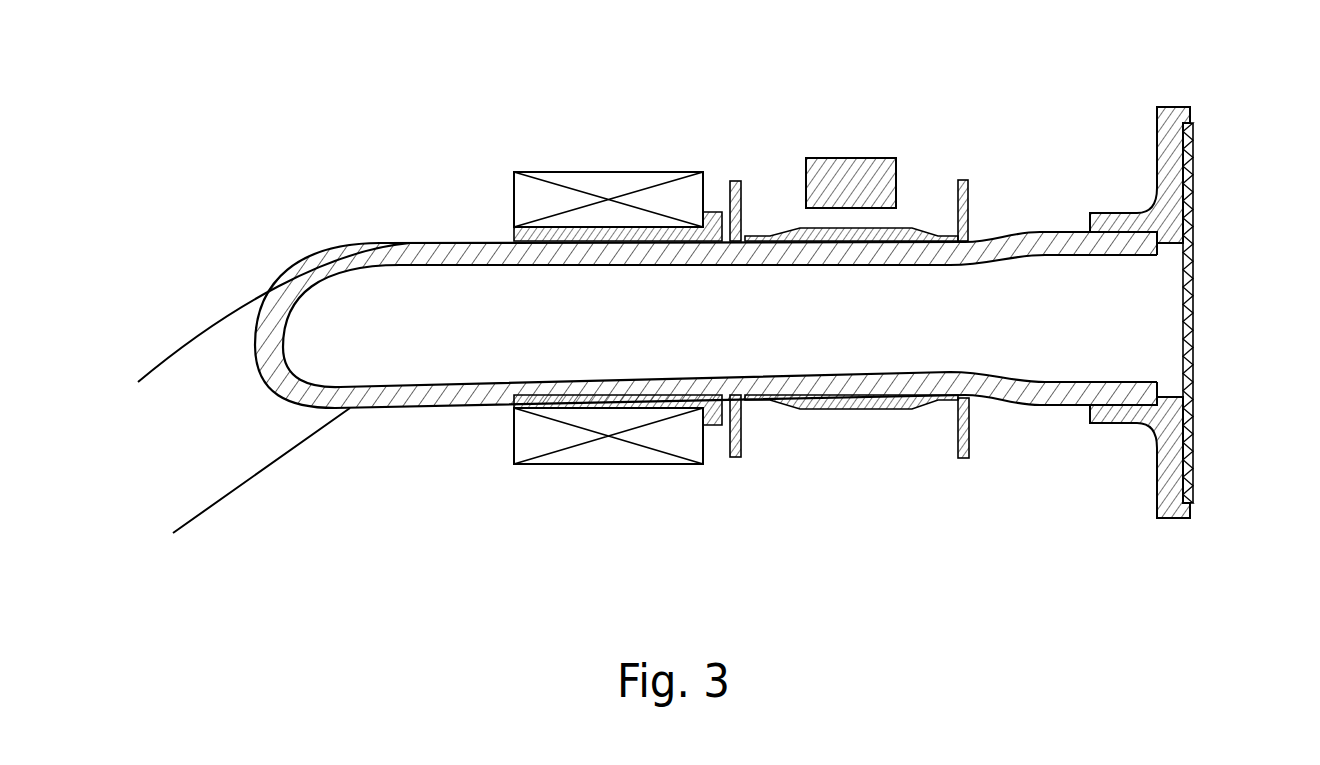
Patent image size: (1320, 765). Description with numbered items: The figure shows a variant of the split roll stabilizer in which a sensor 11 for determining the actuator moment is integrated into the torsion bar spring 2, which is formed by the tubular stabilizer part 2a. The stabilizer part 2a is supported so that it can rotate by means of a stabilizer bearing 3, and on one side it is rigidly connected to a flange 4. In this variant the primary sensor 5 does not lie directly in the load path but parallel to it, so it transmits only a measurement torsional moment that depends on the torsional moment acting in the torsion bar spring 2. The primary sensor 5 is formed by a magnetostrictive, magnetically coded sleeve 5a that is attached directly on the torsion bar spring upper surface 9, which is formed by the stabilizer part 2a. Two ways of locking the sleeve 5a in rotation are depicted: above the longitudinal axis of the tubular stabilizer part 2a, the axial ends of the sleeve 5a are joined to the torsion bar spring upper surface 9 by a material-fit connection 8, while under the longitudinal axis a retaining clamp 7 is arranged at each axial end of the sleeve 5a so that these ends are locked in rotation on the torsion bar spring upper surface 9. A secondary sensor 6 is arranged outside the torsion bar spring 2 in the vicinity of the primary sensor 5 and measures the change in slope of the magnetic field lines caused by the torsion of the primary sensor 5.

The torsion bar spring 2 is at (647, 382).
The stabilizer part 2a is at (460, 397).
The stabilizer bearing 3 is at (623, 183).
The flange 4 is at (1168, 440).
The primary sensor 5 is at (851, 373).
The sleeve 5a is at (862, 410).
The secondary sensor 6 is at (843, 190).
The retaining clamp 7 is at (733, 457).
The material-fit connection 8 is at (748, 235).
The torsion bar spring upper surface 9 is at (717, 253).
The sensor 11 is at (908, 126).